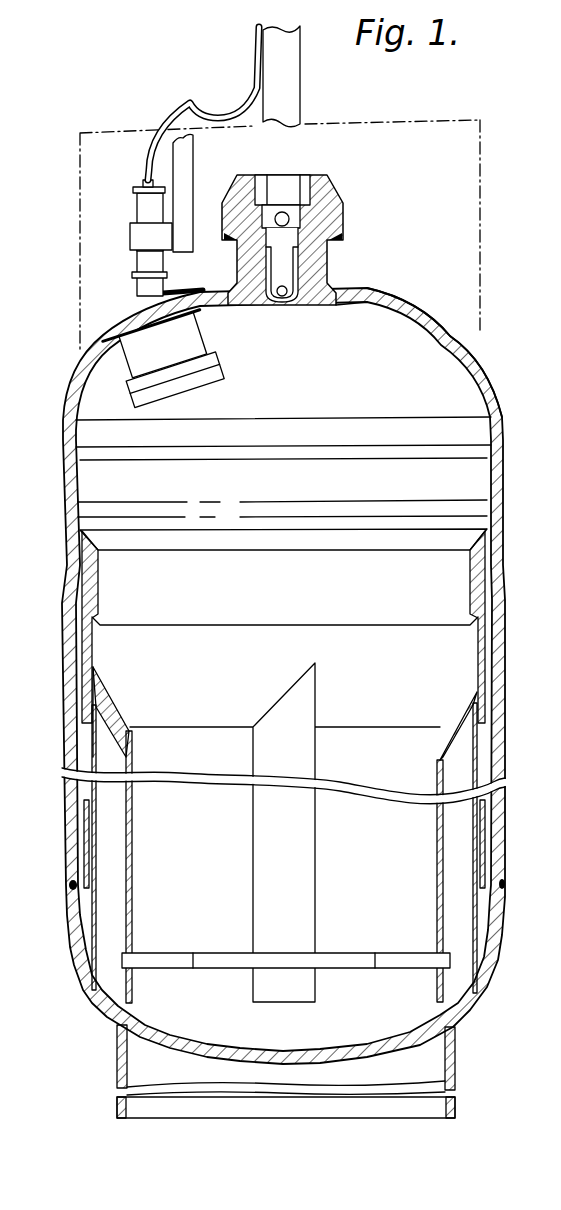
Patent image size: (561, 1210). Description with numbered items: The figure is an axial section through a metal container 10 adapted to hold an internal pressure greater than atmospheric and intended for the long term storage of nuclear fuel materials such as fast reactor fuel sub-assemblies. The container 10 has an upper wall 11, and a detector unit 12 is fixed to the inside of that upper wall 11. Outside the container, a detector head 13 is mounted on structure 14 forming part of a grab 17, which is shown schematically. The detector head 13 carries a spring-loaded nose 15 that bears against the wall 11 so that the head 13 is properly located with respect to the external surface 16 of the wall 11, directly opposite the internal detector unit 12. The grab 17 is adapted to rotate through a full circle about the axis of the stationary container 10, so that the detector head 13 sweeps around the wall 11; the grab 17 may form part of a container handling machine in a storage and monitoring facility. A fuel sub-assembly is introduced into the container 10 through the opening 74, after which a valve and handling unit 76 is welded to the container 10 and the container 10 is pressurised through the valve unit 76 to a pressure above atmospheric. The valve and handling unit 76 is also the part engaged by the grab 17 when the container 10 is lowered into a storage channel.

The metal container 10 is at (294, 626).
The upper wall 11 is at (401, 290).
The detector unit 12 is at (150, 352).
The detector head 13 is at (147, 211).
The structure 14 is at (177, 164).
The spring-loaded nose 15 is at (147, 291).
The external surface 16 is at (453, 313).
The grab 17 is at (463, 160).
The opening 74 is at (363, 287).
The valve and handling unit 76 is at (333, 188).